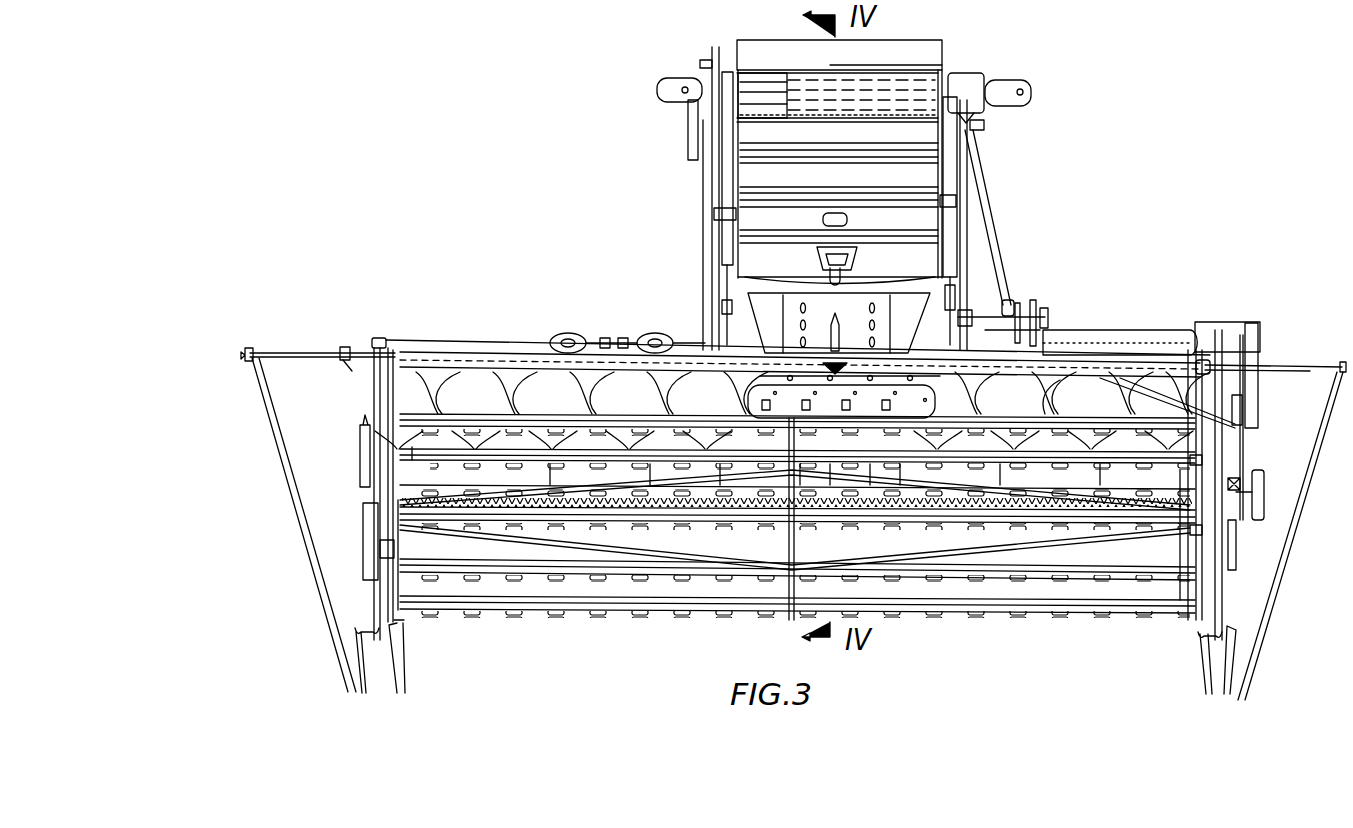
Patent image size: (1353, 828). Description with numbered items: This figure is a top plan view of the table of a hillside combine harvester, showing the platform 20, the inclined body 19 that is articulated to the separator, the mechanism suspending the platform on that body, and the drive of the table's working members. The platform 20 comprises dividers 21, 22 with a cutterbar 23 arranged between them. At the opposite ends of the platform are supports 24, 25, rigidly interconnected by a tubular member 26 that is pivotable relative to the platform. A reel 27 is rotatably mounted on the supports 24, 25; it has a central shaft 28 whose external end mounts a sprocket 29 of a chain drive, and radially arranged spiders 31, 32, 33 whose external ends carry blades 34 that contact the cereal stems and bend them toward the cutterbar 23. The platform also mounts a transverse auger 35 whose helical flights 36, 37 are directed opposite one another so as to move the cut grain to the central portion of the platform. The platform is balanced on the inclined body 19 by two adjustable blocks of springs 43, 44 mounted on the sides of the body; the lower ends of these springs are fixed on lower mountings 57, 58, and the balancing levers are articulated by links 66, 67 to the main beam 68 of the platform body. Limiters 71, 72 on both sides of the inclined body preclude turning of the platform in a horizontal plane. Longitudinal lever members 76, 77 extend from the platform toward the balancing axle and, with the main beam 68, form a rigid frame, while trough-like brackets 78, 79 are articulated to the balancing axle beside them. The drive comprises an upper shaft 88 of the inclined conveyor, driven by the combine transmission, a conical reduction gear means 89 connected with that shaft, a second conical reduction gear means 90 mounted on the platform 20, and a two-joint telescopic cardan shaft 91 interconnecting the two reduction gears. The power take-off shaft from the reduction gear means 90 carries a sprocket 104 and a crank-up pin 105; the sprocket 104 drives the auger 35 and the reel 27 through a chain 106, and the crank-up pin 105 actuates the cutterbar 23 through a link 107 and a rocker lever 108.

The inclined body 19 is at (1000, 132).
The platform 20 is at (407, 474).
The divider 21 is at (1220, 660).
The divider 22 is at (373, 659).
The cutterbar 23 is at (418, 535).
The support 24 is at (373, 463).
The support 25 is at (1222, 598).
The tubular member 26 is at (1093, 368).
The reel 27 is at (428, 444).
The central shaft 28 is at (1235, 520).
The sprocket 29 is at (1250, 493).
The spider 31 is at (408, 565).
The spider 32 is at (782, 583).
The spider 33 is at (1185, 548).
The blades 34 is at (997, 612).
The transverse auger 35 is at (549, 382).
The helical flight 36 is at (505, 378).
The helical flight 37 is at (1108, 387).
The adjustable block of springs 43 is at (722, 244).
The adjustable block of springs 44 is at (950, 250).
The lower mounting 57 is at (748, 103).
The lower mounting 58 is at (950, 280).
The link 66 is at (688, 337).
The link 67 is at (927, 348).
The main beam 68 is at (612, 346).
The limiter 71 is at (716, 222).
The limiter 72 is at (952, 200).
The longitudinal lever member 76 is at (700, 186).
The longitudinal lever member 77 is at (975, 266).
The trough-like bracket 78 is at (685, 162).
The trough-like bracket 79 is at (983, 137).
The upper shaft 88 is at (755, 78).
The conical reduction gear means 89 is at (987, 78).
The conical reduction gear means 90 is at (1040, 327).
The two-joint telescopic cardan shaft 91 is at (985, 176).
The sprocket 104 is at (1236, 328).
The crank-up pin 105 is at (1240, 345).
The chain 106 is at (1240, 386).
The link 107 is at (1245, 410).
The rocker lever 108 is at (1243, 482).